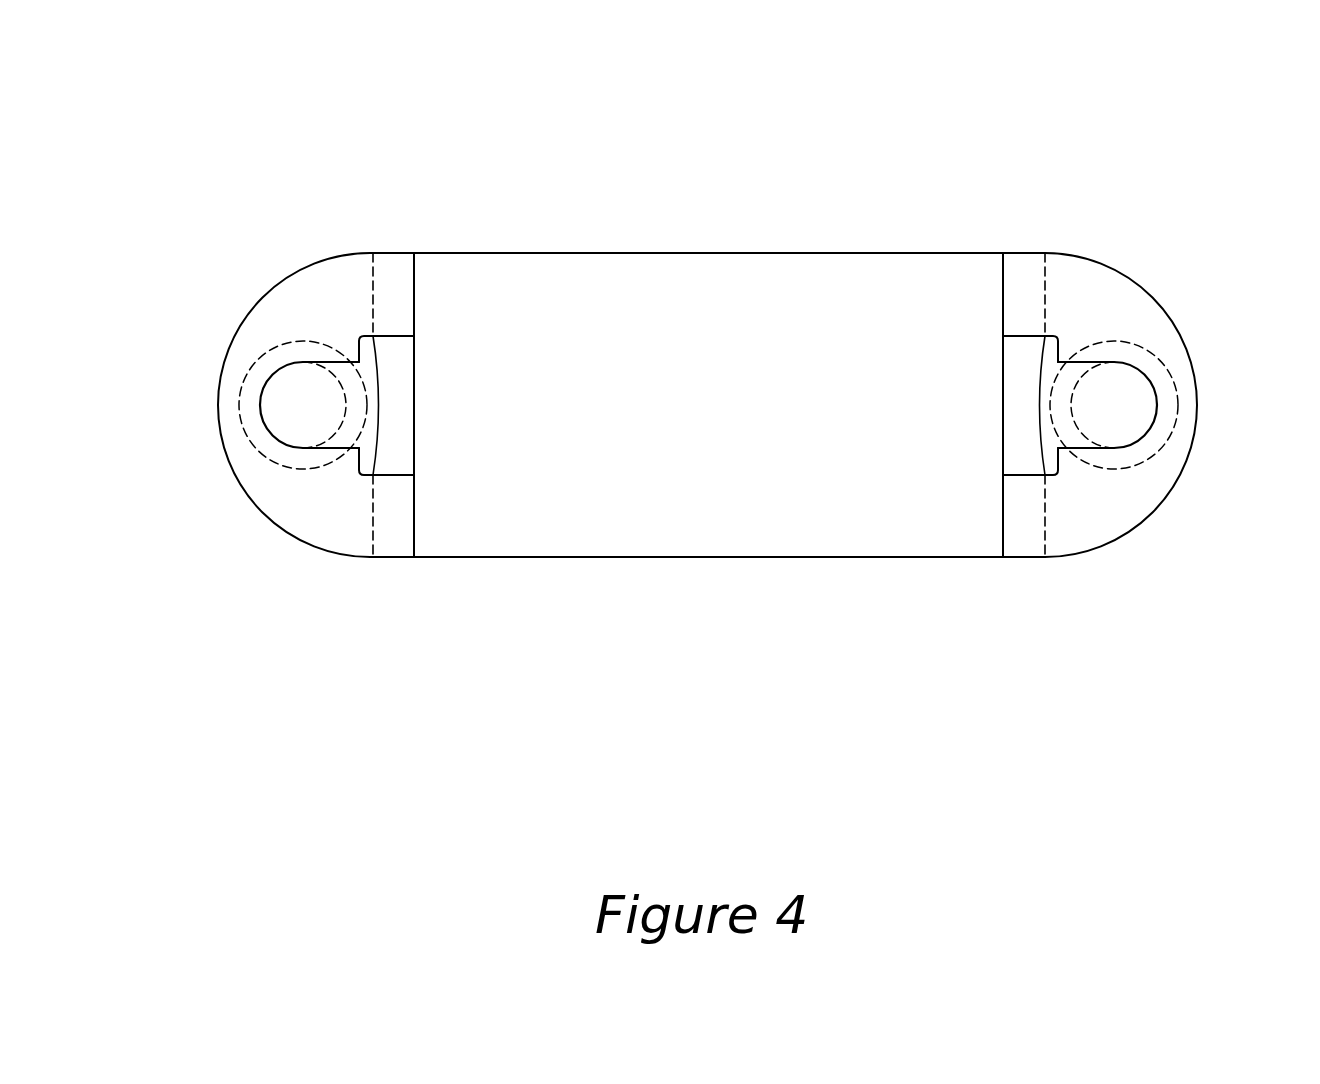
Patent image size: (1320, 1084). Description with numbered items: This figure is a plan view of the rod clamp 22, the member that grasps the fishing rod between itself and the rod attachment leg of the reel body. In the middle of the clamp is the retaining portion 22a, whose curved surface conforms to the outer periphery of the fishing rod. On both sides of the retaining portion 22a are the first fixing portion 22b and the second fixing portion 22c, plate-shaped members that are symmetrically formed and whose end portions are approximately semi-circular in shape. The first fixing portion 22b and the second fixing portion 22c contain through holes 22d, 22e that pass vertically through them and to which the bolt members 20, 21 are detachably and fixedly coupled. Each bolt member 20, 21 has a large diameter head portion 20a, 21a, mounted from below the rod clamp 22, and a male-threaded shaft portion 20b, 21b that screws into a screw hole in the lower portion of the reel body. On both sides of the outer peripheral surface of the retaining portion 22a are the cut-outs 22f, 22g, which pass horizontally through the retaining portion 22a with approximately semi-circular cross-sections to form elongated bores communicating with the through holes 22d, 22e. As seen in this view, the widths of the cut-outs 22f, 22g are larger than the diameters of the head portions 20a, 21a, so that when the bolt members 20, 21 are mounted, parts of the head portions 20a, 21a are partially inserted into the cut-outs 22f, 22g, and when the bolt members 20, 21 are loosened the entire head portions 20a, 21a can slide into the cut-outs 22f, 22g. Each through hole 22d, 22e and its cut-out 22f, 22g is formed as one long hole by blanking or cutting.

The bolt member 20 is at (286, 282).
The head portion 20a is at (253, 330).
The shaft portion 20b is at (327, 373).
The bolt member 21 is at (1179, 337).
The head portion 21a is at (1152, 348).
The shaft portion 21b is at (1175, 438).
The rod clamp 22 is at (913, 600).
The retaining portion 22a is at (618, 523).
The first fixing portion 22b is at (238, 345).
The second fixing portion 22c is at (1122, 280).
The through hole 22d is at (263, 412).
The through hole 22e is at (1158, 415).
The cut-out 22f is at (397, 337).
The cut-out 22g is at (1022, 337).